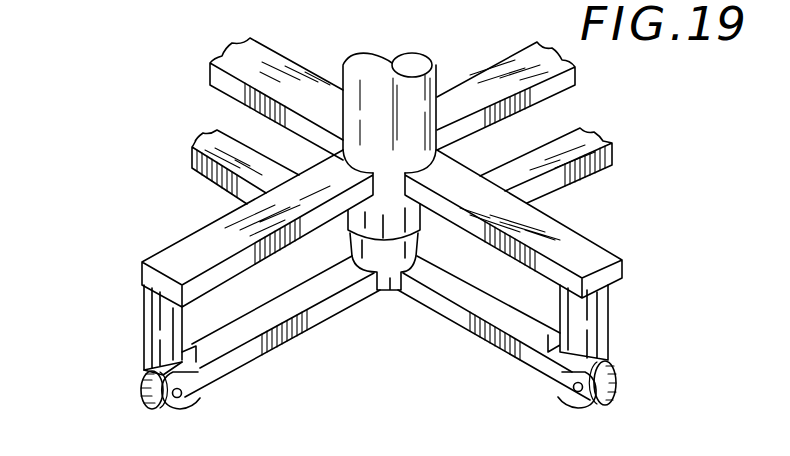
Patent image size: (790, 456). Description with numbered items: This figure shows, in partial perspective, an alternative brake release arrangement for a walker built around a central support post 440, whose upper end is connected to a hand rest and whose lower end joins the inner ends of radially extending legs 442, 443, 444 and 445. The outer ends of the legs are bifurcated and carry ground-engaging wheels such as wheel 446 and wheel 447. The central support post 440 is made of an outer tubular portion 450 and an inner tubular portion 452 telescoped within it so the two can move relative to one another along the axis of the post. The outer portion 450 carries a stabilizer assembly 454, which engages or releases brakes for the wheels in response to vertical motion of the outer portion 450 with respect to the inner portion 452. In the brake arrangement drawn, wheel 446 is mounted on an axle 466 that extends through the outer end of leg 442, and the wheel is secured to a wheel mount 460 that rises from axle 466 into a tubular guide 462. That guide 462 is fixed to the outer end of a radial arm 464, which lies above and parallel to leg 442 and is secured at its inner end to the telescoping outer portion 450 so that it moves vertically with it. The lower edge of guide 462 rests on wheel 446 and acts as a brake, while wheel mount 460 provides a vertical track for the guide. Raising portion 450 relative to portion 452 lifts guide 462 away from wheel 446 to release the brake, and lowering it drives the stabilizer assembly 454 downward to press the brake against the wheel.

The central support post 440 is at (437, 67).
The radially extending leg 442 is at (300, 333).
The radially extending leg 443 is at (193, 173).
The radially extending leg 444 is at (607, 167).
The radially extending leg 445 is at (483, 345).
The ground-engaging wheel 446 is at (172, 407).
The ground-engaging wheel 447 is at (612, 393).
The outer tubular portion 450 is at (353, 60).
The inner tubular portion 452 is at (382, 293).
The stabilizer assembly 454 is at (132, 329).
The wheel mount 460 is at (147, 392).
The tubular guide 462 is at (152, 305).
The radial arm 464 is at (165, 252).
The axle 466 is at (198, 383).